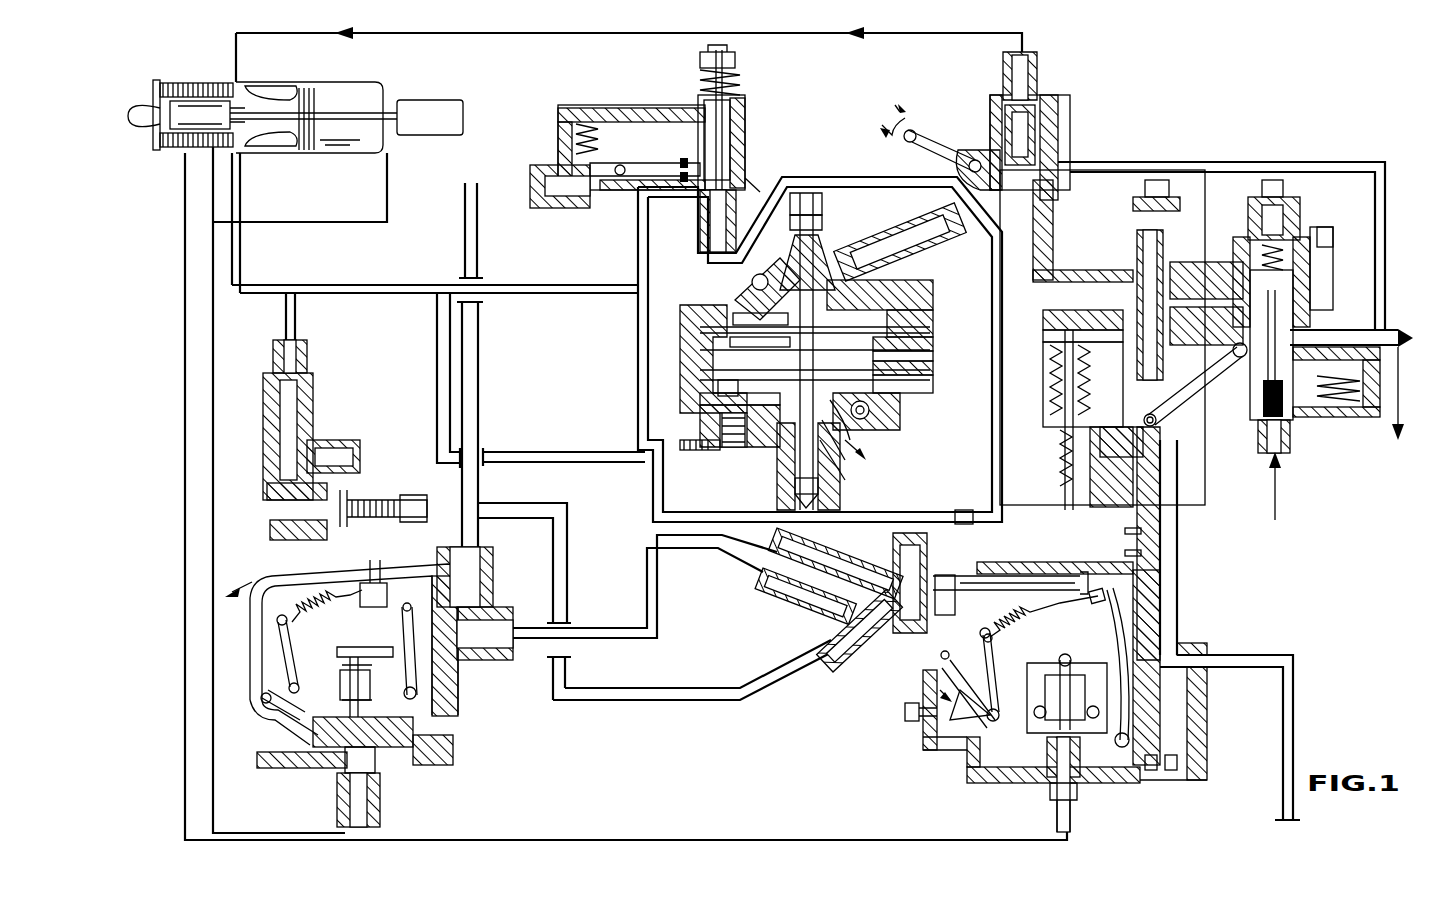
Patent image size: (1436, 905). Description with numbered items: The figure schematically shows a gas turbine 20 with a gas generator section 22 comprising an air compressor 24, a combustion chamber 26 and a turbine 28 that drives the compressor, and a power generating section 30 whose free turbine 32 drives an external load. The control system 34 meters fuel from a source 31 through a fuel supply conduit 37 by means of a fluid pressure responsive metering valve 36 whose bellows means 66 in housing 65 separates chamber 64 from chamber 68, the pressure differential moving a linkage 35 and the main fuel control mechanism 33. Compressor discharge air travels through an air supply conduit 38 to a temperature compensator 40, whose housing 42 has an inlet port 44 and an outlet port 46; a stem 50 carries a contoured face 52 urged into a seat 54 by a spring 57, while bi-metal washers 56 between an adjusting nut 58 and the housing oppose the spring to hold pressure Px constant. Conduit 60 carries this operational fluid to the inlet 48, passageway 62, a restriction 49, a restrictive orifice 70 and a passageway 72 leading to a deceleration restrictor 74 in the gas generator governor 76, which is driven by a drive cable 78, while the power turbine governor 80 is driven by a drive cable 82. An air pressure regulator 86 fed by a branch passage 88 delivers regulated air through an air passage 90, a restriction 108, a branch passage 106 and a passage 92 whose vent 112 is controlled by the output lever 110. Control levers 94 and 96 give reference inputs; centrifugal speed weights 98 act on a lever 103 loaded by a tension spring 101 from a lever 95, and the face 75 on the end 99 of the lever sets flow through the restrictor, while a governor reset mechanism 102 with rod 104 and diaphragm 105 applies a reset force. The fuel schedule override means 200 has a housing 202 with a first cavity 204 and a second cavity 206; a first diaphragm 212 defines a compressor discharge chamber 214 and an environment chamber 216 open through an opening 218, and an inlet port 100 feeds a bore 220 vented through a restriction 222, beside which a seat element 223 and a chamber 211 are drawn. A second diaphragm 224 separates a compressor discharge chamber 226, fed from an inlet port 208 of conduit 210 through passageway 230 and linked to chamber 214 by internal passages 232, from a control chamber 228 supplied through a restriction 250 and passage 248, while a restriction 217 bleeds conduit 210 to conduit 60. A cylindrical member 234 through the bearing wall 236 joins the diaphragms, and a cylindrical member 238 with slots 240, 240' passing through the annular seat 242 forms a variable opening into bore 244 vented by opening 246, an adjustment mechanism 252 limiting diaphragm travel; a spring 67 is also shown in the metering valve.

The gas turbine 20 is at (297, 115).
The gas generator section 22 is at (168, 148).
The air compressor 24 is at (216, 100).
The combustion chamber 26 is at (265, 90).
The turbine 28 is at (300, 152).
The power generating section 30 is at (346, 82).
The fuel source 31 is at (1272, 484).
The free or power turbine 32 is at (316, 152).
The main fuel control mechanism 33 is at (1316, 311).
The control system 34 is at (720, 762).
The linkage 35 is at (1195, 387).
The metering valve 36 is at (1202, 430).
The fuel supply conduit 37 is at (937, 34).
The air supply conduit 38 is at (241, 250).
The temperature compensator 40 is at (664, 151).
The housing 42 is at (616, 105).
The inlet port 44 is at (618, 203).
The outlet port 46 is at (703, 235).
The inlet 48 is at (1125, 533).
The restriction 49 is at (1125, 553).
The stem 50 is at (745, 100).
The contoured face 52 is at (736, 160).
The seat 54 is at (744, 190).
The bi-metal washers 56 is at (742, 80).
The spring 57 is at (732, 122).
The adjusting nut 58 is at (737, 62).
The conduit 60 is at (855, 177).
The passageway 62 is at (1106, 470).
The chamber 64 is at (1036, 464).
The housing 65 is at (1008, 420).
The bellows means 66 is at (1050, 312).
The spring 67 is at (1056, 474).
The chamber 68 is at (1108, 307).
The restrictive orifice 70 is at (1162, 512).
The passageway 72 is at (1178, 584).
The deceleration restrictor 74 is at (1175, 775).
The face 75 is at (1152, 772).
The gas generator governor 76 is at (987, 680).
The drive cable 78 is at (775, 838).
The power turbine governor 80 is at (379, 687).
The drive cable 82 is at (214, 808).
The air pressure regulator 86 is at (335, 445).
The branch passage 88 is at (297, 322).
The air passage 90 is at (645, 578).
The passage 92 is at (458, 693).
The control lever 94 is at (932, 150).
The lever 95 is at (996, 722).
The control lever 96 is at (272, 645).
The centrifugal speed weights 98 is at (1032, 692).
The end 99 is at (1132, 770).
The inlet port 100 is at (955, 235).
The tension spring 101 is at (1020, 608).
The governor reset mechanism 102 is at (830, 610).
The lever 103 is at (1110, 620).
The rod 104 is at (1000, 582).
The diaphragm 105 is at (955, 558).
The branch passage 106 is at (648, 700).
The restriction 108 is at (515, 590).
The output lever 110 is at (378, 620).
The vent 112 is at (455, 718).
The fuel schedule override means 200 is at (753, 358).
The housing 202 is at (680, 318).
The first cavity 204 is at (933, 300).
The second cavity 206 is at (934, 384).
The inlet port 208 is at (690, 448).
The conduit 210 is at (524, 452).
The chamber 211 is at (735, 288).
The first diaphragm 212 is at (934, 338).
The compressor discharge chamber 214 is at (700, 352).
The environment chamber 216 is at (920, 292).
The restriction 217 is at (963, 510).
The opening 218 is at (735, 300).
The bore 220 is at (820, 255).
The restriction 222 is at (748, 280).
The spring seat 223 is at (790, 222).
The second diaphragm 224 is at (934, 368).
The compressor discharge chamber 226 is at (934, 352).
The control chamber 228 is at (905, 400).
The passageway 230 is at (700, 410).
The internal passages 232 is at (700, 375).
The cylindrical member 234 is at (700, 330).
The bearing wall 236 is at (700, 398).
The cylindrical member 238 is at (860, 425).
The slots or openings 240 is at (762, 466).
The slots or openings 240' is at (780, 466).
The annular seat 242 is at (875, 412).
The bore 244 is at (850, 455).
The opening 246 is at (850, 440).
The passage 248 is at (720, 388).
The restriction 250 is at (728, 448).
The adjustment mechanism 252 is at (828, 490).